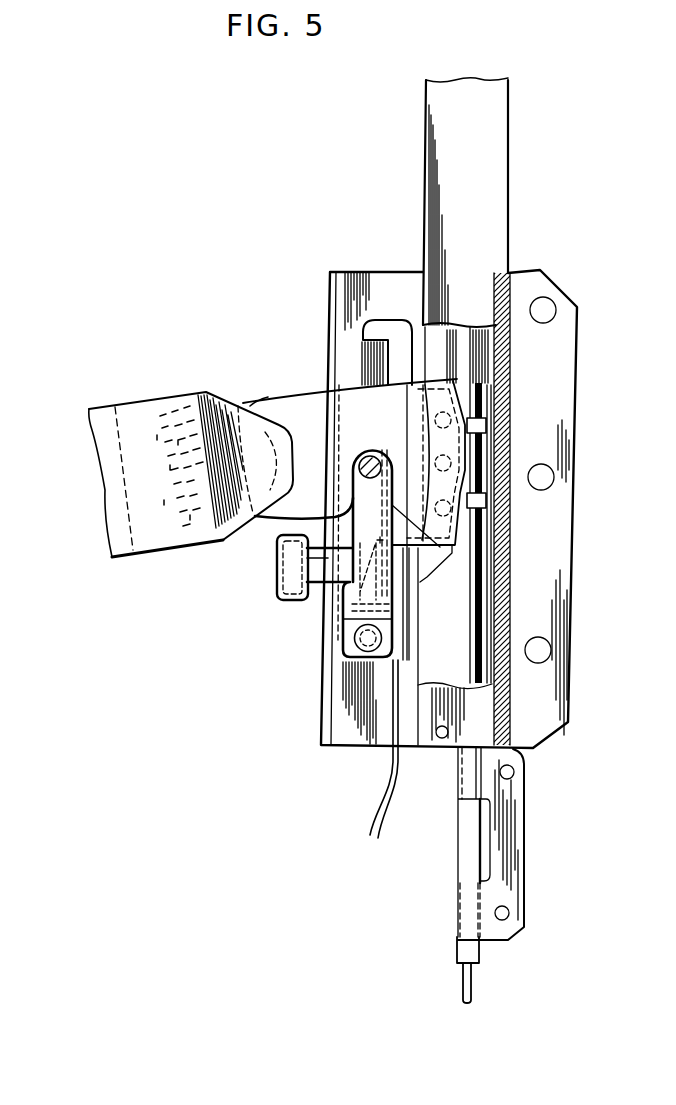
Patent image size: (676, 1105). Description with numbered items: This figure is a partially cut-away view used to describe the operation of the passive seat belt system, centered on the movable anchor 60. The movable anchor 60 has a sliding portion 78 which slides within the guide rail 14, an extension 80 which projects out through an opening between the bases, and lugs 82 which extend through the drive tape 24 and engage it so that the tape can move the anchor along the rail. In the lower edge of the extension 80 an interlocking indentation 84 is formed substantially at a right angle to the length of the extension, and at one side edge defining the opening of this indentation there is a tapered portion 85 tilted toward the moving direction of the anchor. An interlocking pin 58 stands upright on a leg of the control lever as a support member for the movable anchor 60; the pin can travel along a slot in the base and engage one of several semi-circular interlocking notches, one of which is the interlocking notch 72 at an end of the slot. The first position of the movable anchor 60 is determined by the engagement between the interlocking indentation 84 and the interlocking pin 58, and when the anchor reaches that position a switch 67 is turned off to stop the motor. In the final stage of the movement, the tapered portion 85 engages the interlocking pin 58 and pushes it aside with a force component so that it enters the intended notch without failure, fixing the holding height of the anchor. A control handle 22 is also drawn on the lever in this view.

The guide rail 14 is at (493, 186).
The handle 22 is at (135, 405).
The drive tape 24 is at (496, 625).
The interlocking pin 58 is at (370, 456).
The movable anchor 60 is at (398, 488).
The switch 67 is at (348, 618).
The interlocking notch 72 is at (381, 320).
The sliding portion 78 is at (443, 527).
The extension 80 is at (277, 511).
The lugs 82 is at (486, 500).
The interlocking indentation 84 is at (349, 501).
The tapered portion 85 is at (393, 545).